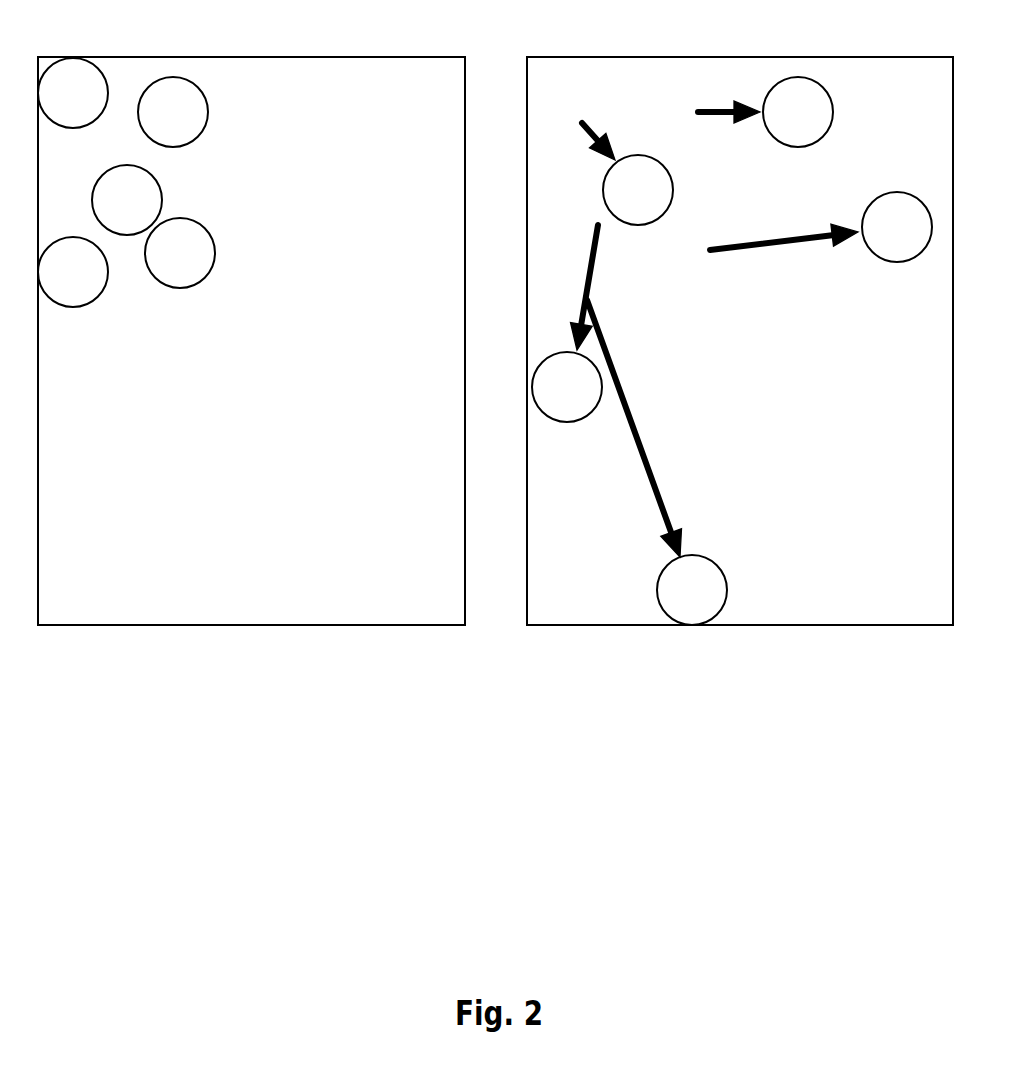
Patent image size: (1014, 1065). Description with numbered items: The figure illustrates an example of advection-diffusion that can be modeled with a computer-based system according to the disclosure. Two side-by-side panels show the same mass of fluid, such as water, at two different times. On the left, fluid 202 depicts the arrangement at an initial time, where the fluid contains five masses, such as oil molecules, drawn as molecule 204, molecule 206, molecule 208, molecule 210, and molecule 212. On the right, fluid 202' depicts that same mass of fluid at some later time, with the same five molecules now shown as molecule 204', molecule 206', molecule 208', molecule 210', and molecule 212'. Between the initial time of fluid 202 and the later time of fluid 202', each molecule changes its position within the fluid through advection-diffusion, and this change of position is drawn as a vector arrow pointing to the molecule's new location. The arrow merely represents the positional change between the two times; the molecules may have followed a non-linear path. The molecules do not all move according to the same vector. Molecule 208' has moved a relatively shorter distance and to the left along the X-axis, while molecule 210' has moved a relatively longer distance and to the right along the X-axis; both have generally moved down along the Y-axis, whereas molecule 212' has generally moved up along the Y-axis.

The fluid 202 is at (251, 381).
The molecule 204 is at (73, 93).
The molecule 206 is at (173, 112).
The molecule 208 is at (127, 200).
The molecule 210 is at (73, 272).
The molecule 212 is at (180, 253).
The fluid 202' is at (740, 381).
The molecule 204' is at (627, 174).
The molecule 206' is at (765, 112).
The molecule 208' is at (567, 323).
The molecule 210' is at (657, 462).
The molecule 212' is at (821, 227).